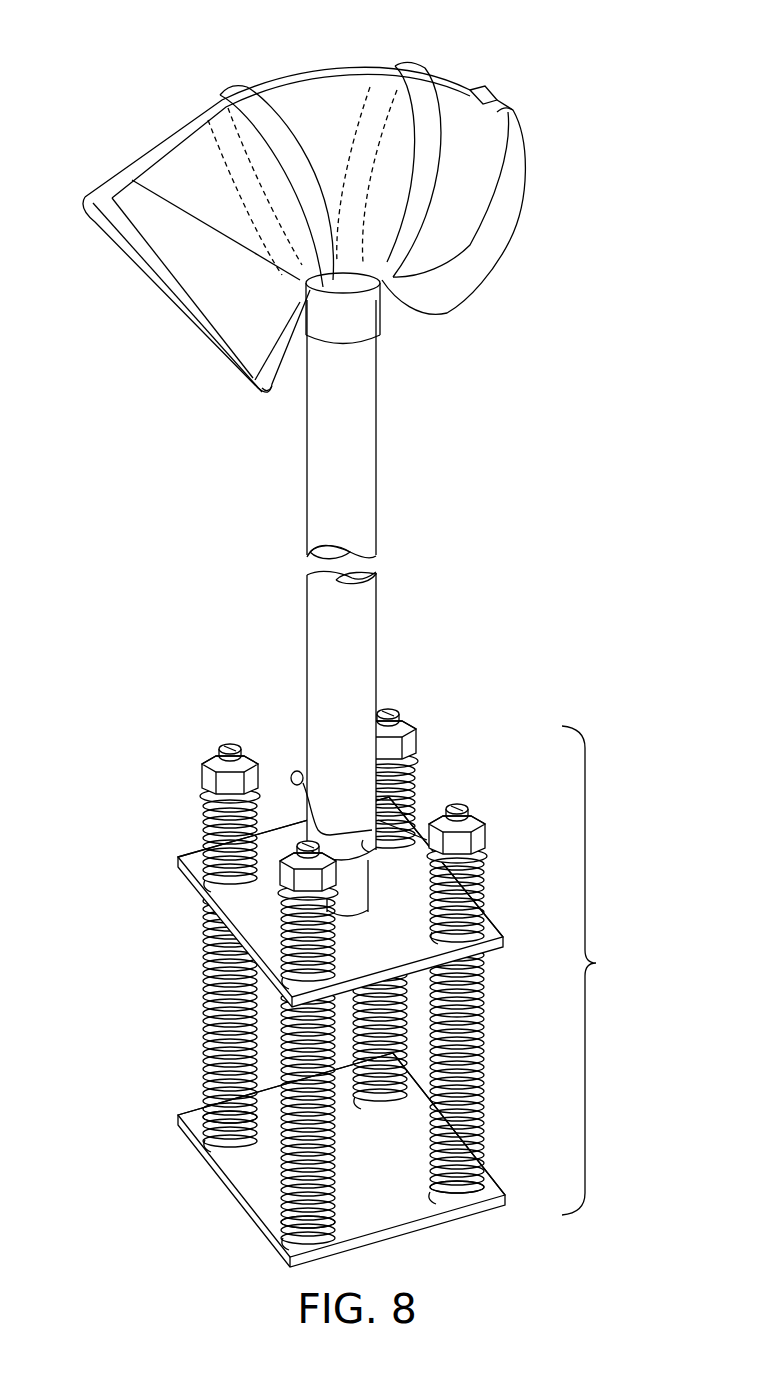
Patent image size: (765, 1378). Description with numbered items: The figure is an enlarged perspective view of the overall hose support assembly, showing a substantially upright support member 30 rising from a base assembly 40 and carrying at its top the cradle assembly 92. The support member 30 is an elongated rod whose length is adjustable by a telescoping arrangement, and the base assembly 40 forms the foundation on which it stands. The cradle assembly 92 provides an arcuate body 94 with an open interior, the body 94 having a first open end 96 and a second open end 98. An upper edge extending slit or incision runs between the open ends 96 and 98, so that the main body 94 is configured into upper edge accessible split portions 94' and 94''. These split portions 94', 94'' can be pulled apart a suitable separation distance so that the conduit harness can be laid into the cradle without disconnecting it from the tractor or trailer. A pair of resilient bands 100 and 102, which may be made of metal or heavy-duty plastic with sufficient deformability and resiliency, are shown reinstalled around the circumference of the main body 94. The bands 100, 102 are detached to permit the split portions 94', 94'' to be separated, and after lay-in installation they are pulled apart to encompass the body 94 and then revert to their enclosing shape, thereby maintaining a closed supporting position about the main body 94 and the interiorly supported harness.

The support member 30 is at (398, 907).
The base assembly 40 is at (405, 988).
The cradle assembly 92 is at (293, 223).
The body 94 is at (302, 181).
The split portion 94' is at (196, 245).
The split portion 94'' is at (185, 245).
The first open end 96 is at (268, 362).
The second open end 98 is at (458, 298).
The resilient band 100 is at (240, 88).
The resilient band 102 is at (414, 70).